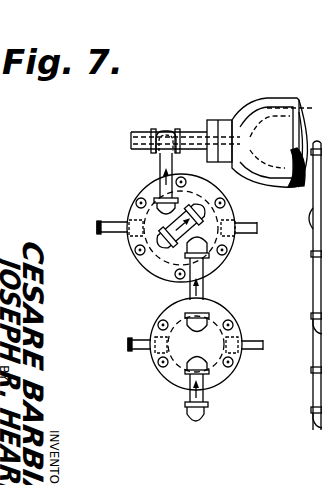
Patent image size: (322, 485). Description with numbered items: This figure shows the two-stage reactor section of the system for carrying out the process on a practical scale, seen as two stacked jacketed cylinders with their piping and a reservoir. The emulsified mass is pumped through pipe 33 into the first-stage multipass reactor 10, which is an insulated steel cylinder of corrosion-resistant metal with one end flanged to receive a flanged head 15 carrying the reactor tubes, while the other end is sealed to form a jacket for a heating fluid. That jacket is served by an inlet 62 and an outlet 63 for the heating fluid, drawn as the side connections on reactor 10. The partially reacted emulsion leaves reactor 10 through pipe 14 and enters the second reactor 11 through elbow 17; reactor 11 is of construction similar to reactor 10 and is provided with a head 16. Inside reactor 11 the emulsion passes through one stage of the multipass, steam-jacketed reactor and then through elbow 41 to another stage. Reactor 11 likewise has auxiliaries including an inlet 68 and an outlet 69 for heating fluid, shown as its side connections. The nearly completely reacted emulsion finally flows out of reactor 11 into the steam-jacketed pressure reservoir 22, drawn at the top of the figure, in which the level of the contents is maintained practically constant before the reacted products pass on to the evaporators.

The multipass reactor 10 is at (156, 380).
The reactor 11 is at (233, 252).
The pipe 14 is at (314, 282).
The flanged head 15 is at (318, 352).
The head 16 is at (128, 208).
The elbow 17 is at (227, 266).
The steam-jacketed pressure reservoir 22 is at (237, 106).
The pipe 33 is at (199, 425).
The elbow 41 is at (226, 198).
The inlet 62 is at (264, 345).
The outlet 63 is at (131, 341).
The inlet 68 is at (247, 224).
The outlet 69 is at (100, 224).